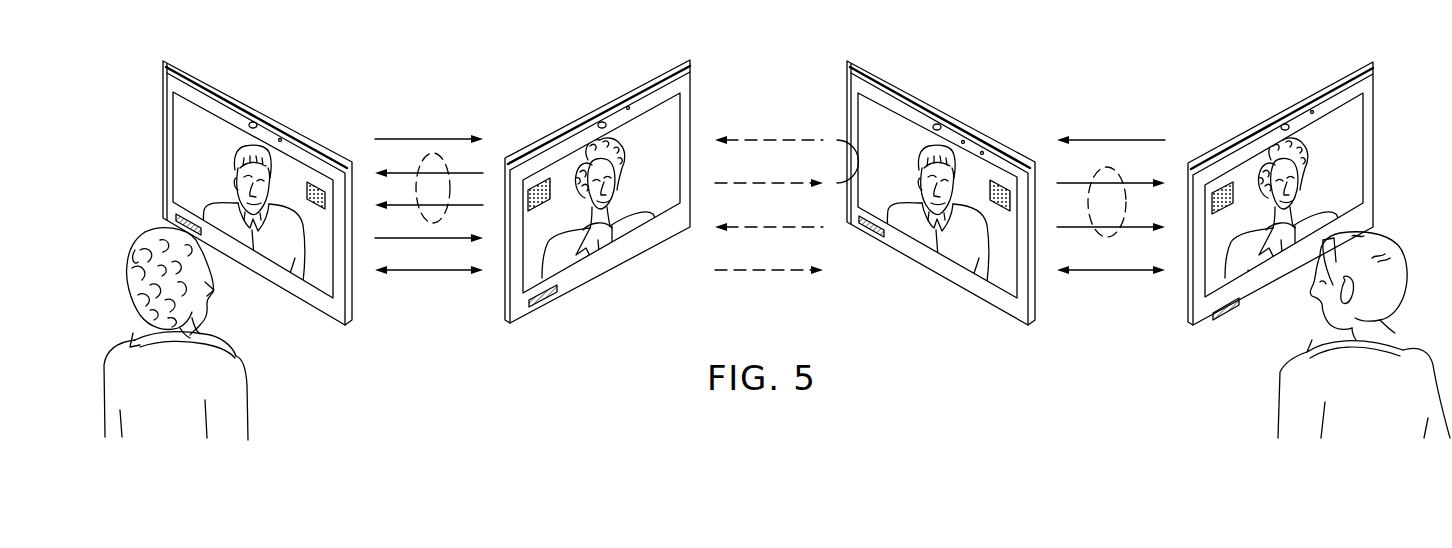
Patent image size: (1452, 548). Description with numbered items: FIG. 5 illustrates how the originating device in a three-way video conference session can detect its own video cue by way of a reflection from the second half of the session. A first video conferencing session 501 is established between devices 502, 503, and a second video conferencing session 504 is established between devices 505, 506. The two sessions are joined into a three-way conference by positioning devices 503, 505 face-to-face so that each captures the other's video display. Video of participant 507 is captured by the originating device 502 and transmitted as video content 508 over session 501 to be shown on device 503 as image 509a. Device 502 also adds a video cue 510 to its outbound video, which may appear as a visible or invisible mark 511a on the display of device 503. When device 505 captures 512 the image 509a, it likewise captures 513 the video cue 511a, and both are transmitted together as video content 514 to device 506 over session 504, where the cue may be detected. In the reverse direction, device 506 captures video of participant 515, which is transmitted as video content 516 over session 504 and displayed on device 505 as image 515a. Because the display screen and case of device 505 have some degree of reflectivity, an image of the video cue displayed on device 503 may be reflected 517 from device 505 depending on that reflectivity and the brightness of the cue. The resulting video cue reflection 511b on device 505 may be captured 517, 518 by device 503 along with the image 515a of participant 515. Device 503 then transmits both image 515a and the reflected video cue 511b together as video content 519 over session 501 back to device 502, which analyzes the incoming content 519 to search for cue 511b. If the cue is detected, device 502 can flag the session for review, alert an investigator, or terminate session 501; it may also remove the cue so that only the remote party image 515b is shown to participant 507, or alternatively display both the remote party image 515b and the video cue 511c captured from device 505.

The first video conferencing session 501 is at (447, 271).
The originating device 502 is at (263, 103).
The device 503 is at (593, 100).
The second video conferencing session 504 is at (1112, 271).
The device 505 is at (949, 102).
The device 506 is at (1274, 102).
The participant 507 is at (123, 332).
The video content 508 is at (422, 238).
The image 509a is at (572, 257).
The video cue 510 is at (423, 139).
The mark 511a is at (535, 180).
The video cue reflection 511b is at (1002, 180).
The video cue 511c is at (320, 183).
The capture 512 is at (750, 270).
The capture 513 is at (772, 183).
The video content 514 is at (1107, 167).
The participant 515 is at (1410, 348).
The image 515a is at (970, 258).
The remote party image 515b is at (280, 260).
The video content 516 is at (1100, 140).
The reflection 517 is at (815, 140).
The capture 518 is at (762, 227).
The video content 519 is at (432, 155).